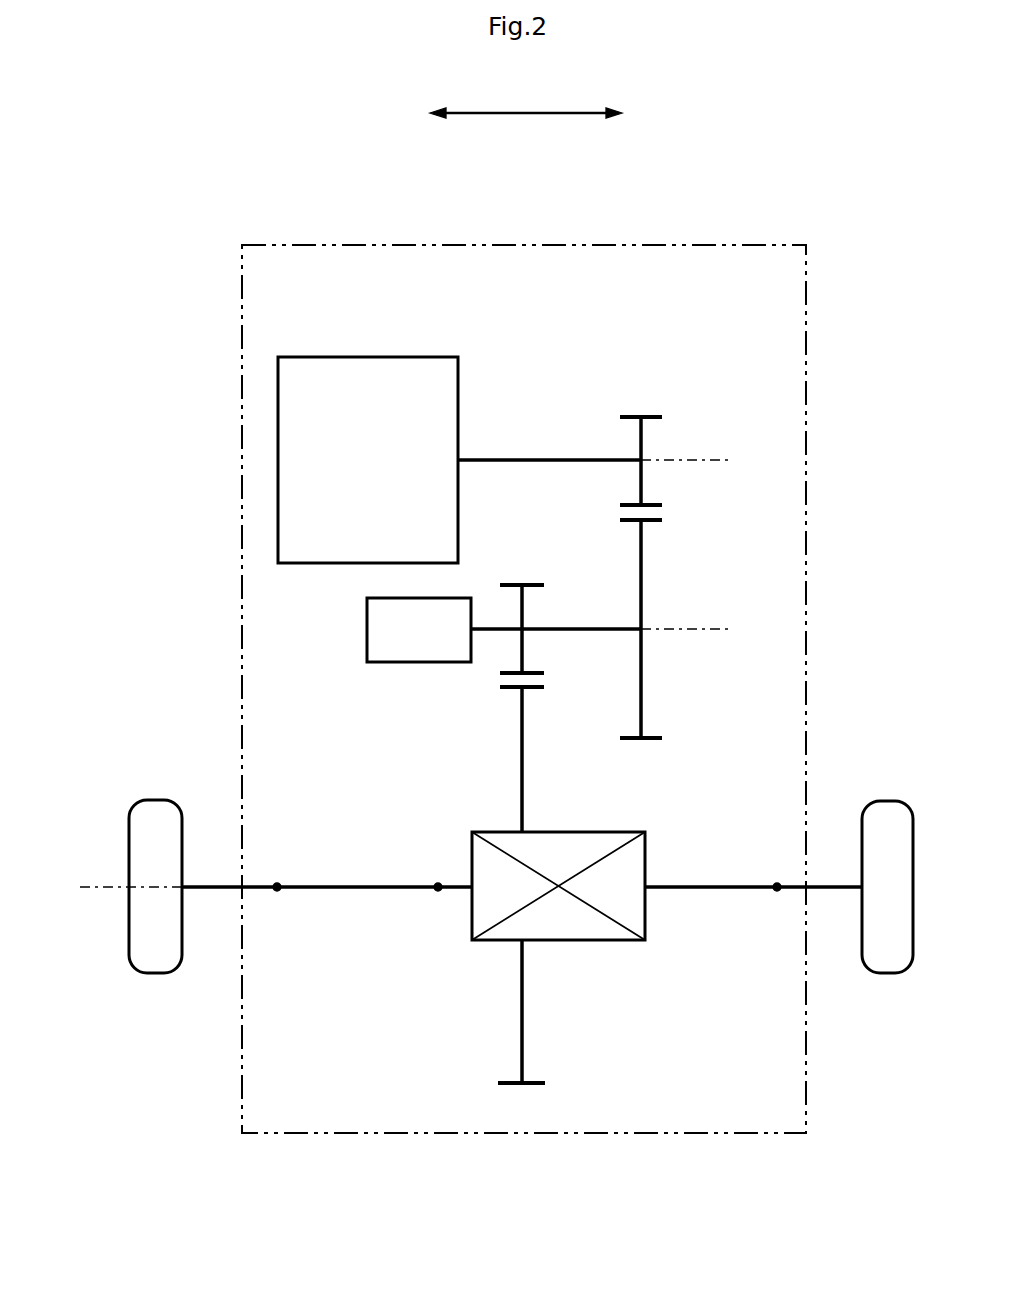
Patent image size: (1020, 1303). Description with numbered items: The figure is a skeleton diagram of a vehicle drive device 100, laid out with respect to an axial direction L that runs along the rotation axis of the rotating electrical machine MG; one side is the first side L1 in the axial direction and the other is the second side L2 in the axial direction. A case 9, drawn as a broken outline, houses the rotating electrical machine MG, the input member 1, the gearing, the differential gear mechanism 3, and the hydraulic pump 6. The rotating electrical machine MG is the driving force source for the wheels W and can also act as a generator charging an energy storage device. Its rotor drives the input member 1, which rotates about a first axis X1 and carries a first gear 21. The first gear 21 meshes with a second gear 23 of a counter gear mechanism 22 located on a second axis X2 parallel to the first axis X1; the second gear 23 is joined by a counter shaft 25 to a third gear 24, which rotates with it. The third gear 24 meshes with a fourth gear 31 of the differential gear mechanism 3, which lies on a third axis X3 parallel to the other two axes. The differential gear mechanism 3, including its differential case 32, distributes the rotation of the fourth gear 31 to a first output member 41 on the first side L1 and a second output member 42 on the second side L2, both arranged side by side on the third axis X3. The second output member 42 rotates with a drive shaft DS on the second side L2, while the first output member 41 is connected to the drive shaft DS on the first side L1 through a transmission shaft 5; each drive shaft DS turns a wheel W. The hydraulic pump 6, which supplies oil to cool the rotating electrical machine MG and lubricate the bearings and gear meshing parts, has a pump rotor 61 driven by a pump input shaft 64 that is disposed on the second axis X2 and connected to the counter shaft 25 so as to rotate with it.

The vehicle drive device 100 is at (212, 197).
The case 9 is at (242, 313).
The rotating electrical machine MG is at (365, 357).
The input member 1 is at (546, 458).
The first gear 21 is at (651, 415).
The counter gear mechanism 22 is at (662, 555).
The second gear 23 is at (652, 742).
The third gear 24 is at (515, 583).
The counter shaft 25 is at (567, 626).
The hydraulic pump 6 is at (358, 678).
The pump rotor 61 is at (367, 629).
The pump input shaft 64 is at (495, 632).
The differential gear mechanism 3 is at (436, 834).
The fourth gear 31 is at (529, 1088).
The differential case 32 is at (582, 942).
The first output member 41 is at (455, 889).
The second output member 42 is at (742, 893).
The transmission shaft 5 is at (347, 889).
The wheel W is at (150, 812).
The drive shaft DS is at (210, 889).
The first axis X1 is at (706, 462).
The second axis X2 is at (706, 631).
The third axis X3 is at (106, 887).
The axial direction L is at (526, 96).
The first side in the axial direction L1 is at (409, 113).
The second side in the axial direction L2 is at (645, 113).